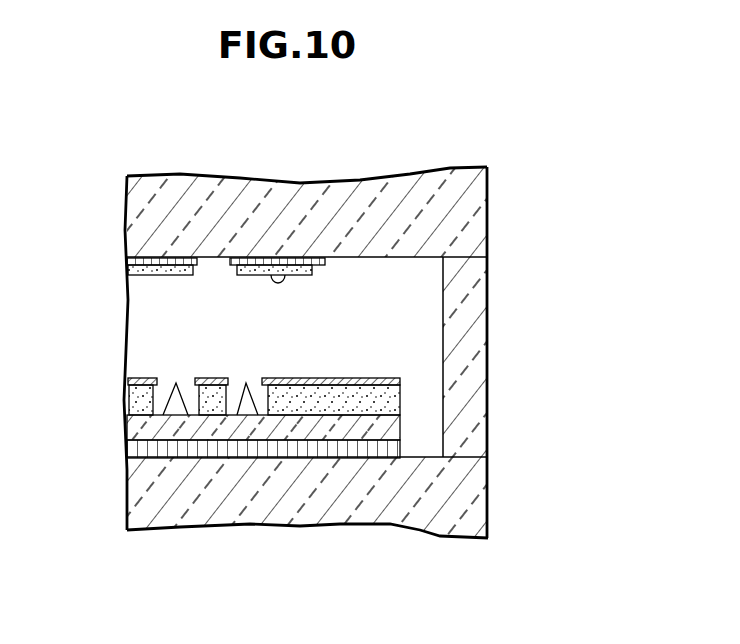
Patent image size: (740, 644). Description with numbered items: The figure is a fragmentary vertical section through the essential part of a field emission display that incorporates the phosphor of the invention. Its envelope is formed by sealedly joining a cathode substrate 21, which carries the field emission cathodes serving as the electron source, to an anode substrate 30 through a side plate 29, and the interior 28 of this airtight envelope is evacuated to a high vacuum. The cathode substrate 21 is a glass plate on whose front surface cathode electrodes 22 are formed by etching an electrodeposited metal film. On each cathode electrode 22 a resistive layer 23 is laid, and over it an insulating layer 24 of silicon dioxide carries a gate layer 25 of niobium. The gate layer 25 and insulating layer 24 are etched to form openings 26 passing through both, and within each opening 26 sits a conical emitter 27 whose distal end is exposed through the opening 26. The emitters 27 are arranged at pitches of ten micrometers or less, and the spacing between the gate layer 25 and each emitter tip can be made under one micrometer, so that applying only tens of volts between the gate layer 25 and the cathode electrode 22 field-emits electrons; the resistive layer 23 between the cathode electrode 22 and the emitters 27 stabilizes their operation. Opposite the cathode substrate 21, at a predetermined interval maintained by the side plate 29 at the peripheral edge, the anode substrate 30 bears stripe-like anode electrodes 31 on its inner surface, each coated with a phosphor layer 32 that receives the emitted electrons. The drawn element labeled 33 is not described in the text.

The cathode substrate 21 is at (468, 498).
The cathode electrodes 22 is at (150, 458).
The resistive layer 23 is at (215, 440).
The insulating layer 24 is at (347, 405).
The gate layer 25 is at (393, 373).
The openings 26 is at (174, 385).
The emitter 27 is at (247, 417).
The interior 28 is at (168, 332).
The side plate 29 is at (487, 362).
The anode substrate 30 is at (465, 238).
The anode electrodes 31 is at (243, 257).
The phosphor layer 32 is at (279, 282).
The anode electrode layer 33 is at (217, 261).